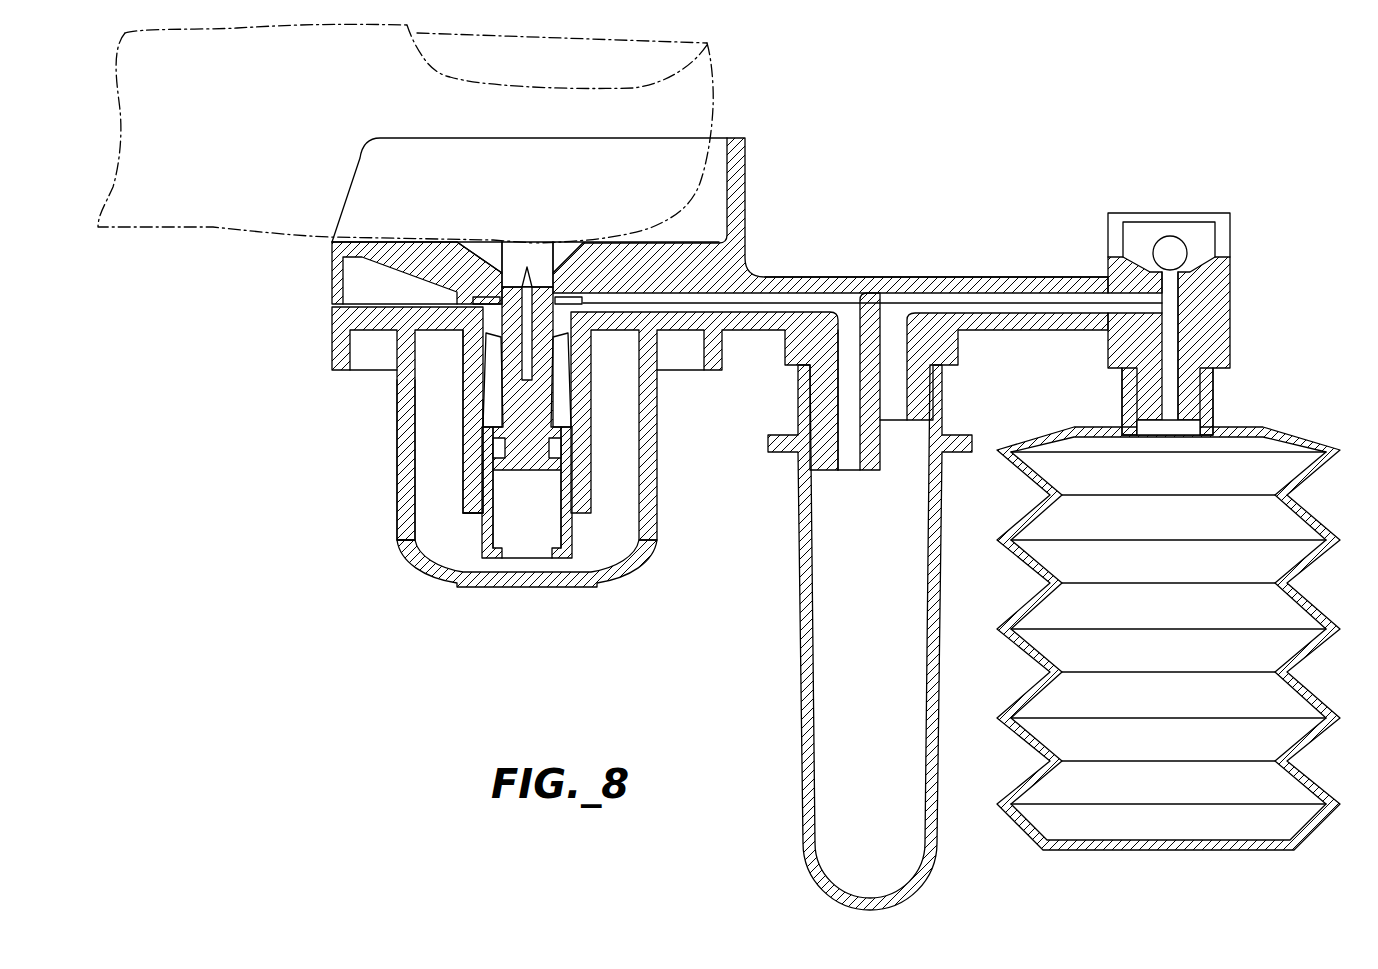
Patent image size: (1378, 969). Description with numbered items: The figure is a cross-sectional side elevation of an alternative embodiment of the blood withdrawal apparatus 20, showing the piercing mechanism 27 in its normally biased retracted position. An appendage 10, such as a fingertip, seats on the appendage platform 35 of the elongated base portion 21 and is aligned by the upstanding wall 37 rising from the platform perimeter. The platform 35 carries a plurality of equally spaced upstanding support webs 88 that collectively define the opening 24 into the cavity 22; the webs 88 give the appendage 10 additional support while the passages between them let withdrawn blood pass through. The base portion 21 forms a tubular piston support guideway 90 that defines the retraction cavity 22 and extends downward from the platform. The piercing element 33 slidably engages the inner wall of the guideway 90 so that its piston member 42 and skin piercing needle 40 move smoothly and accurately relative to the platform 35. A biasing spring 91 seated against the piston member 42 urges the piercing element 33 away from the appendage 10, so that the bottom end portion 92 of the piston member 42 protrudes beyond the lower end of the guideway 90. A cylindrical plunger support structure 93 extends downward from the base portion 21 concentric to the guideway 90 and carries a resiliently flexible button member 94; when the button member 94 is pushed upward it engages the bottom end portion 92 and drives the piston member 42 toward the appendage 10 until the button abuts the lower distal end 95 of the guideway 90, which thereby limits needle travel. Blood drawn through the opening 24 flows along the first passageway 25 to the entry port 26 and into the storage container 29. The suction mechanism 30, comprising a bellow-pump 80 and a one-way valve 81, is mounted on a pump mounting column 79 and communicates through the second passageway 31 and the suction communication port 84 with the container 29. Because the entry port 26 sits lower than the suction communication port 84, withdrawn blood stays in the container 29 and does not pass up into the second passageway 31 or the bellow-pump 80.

The appendage 10 is at (713, 110).
The blood withdrawal apparatus 20 is at (1021, 199).
The base portion 21 is at (1236, 331).
The cavity 22 is at (557, 492).
The opening 24 is at (546, 258).
The first passageway 25 is at (766, 298).
The entry port 26 is at (849, 458).
The piercing mechanism 27 is at (447, 350).
The storage container 29 is at (800, 607).
The suction mechanism 30 is at (1265, 273).
The second passageway 31 is at (893, 322).
The piercing element 33 is at (494, 374).
The appendage platform 35 is at (338, 245).
The upstanding wall 37 is at (748, 211).
The skin piercing needle 40 is at (510, 288).
The piston member 42 is at (573, 529).
The pump mounting column 79 is at (1218, 398).
The bellow-pump 80 is at (1217, 848).
The one-way valve 81 is at (1233, 260).
The suction communication port 84 is at (892, 410).
The support webs 88 is at (490, 252).
The piston support guideway 90 is at (461, 453).
The biasing spring 91 is at (494, 384).
The bottom end portion 92 is at (493, 558).
The plunger support structure 93 is at (397, 500).
The button member 94 is at (563, 588).
The lower distal end 95 is at (467, 518).